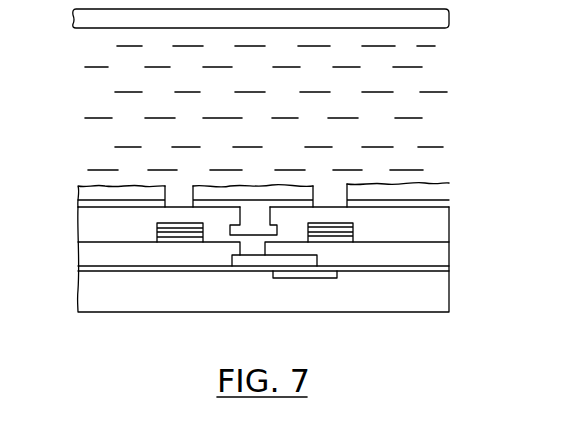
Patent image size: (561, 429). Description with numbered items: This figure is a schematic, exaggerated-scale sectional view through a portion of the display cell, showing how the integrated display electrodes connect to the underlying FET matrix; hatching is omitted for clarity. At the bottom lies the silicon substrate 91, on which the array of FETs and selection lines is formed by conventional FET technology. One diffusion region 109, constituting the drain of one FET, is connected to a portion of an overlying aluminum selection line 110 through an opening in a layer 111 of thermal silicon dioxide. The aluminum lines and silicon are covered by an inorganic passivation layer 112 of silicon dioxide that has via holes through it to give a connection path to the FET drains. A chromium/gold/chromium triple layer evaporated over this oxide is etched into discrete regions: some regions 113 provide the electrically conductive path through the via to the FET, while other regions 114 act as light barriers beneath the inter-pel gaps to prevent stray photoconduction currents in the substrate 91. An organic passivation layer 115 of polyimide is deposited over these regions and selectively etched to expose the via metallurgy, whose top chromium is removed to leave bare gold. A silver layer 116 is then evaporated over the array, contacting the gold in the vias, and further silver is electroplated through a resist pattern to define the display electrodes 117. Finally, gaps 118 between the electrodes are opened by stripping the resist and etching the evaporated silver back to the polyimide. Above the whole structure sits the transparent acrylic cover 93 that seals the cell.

The silicon substrate 91 is at (445, 300).
The cover 93 is at (440, 20).
The diffusion region 109 is at (332, 278).
The aluminum selection line 110 is at (253, 255).
The layer of thermal silicon dioxide 111 is at (100, 266).
The inorganic passivation layer 112 is at (443, 252).
The triple layer regions 113 is at (232, 233).
The light barrier regions 114 is at (353, 228).
The insulating layer 115 is at (83, 228).
The silver layer 116 is at (449, 202).
The display electrodes 117 is at (97, 191).
The gaps 118 is at (330, 206).